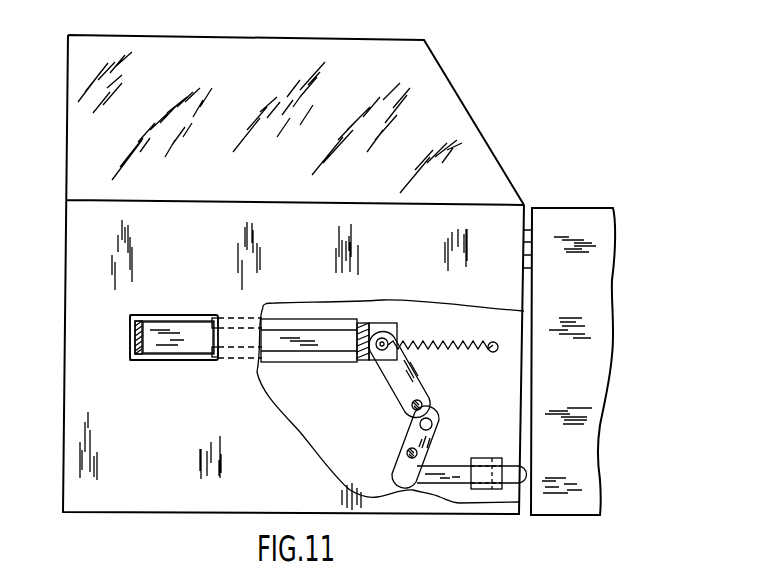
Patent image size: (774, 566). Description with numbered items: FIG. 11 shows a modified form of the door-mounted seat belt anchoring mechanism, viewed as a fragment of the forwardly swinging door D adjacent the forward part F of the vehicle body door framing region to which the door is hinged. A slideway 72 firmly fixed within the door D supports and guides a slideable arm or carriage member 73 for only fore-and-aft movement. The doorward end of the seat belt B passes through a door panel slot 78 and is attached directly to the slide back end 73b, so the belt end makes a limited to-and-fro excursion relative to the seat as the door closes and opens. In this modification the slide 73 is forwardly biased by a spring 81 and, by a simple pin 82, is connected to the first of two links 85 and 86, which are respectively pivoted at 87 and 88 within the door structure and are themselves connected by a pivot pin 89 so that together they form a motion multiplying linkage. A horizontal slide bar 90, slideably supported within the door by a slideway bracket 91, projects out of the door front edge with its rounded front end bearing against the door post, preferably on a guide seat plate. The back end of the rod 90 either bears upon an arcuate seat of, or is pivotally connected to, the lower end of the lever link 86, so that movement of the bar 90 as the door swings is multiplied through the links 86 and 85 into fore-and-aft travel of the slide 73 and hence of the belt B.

The door D is at (64, 412).
The forward part of the vehicle body door framing region F is at (566, 208).
The seat belt B is at (138, 358).
The slideway 72 is at (295, 327).
The slideable arm 73 is at (185, 335).
The slide back end 73b is at (138, 355).
The door panel slot 78 is at (133, 341).
The spring 81 is at (448, 345).
The pin 82 is at (385, 340).
The first link 85 is at (397, 372).
The second link 86 is at (410, 440).
The pivot 87 is at (421, 408).
The pivot 88 is at (409, 455).
The pivot pin 89 is at (434, 424).
The horizontal slide bar 90 is at (450, 483).
The slideway bracket 91 is at (490, 489).